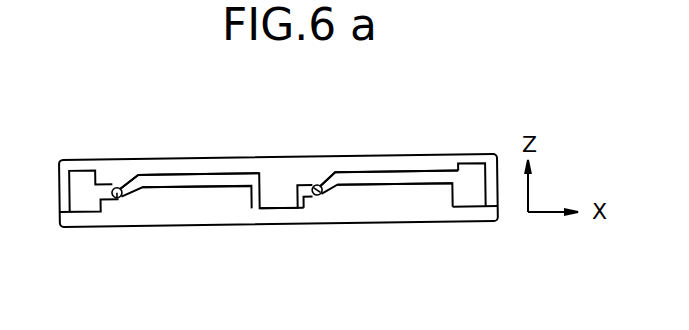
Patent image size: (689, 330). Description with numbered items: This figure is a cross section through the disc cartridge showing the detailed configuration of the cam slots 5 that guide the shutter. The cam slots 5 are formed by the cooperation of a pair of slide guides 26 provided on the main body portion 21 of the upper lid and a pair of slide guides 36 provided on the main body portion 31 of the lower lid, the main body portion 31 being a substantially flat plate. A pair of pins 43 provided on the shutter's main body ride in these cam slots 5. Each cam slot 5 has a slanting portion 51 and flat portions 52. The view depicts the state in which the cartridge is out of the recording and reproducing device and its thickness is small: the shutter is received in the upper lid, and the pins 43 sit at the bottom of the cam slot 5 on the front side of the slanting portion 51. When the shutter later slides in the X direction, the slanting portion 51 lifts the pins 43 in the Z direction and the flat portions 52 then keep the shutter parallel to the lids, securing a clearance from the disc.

The main body portion of the upper lid 21 is at (287, 155).
The slide guides of the upper lid 26 is at (122, 173).
The cam slots 5 is at (230, 187).
The slanting portion 51 is at (137, 177).
The flat portions 52 is at (207, 181).
The slide guides of the lower lid 36 is at (181, 197).
The main body portion of the lower lid 31 is at (275, 224).
The pins 43 is at (115, 198).